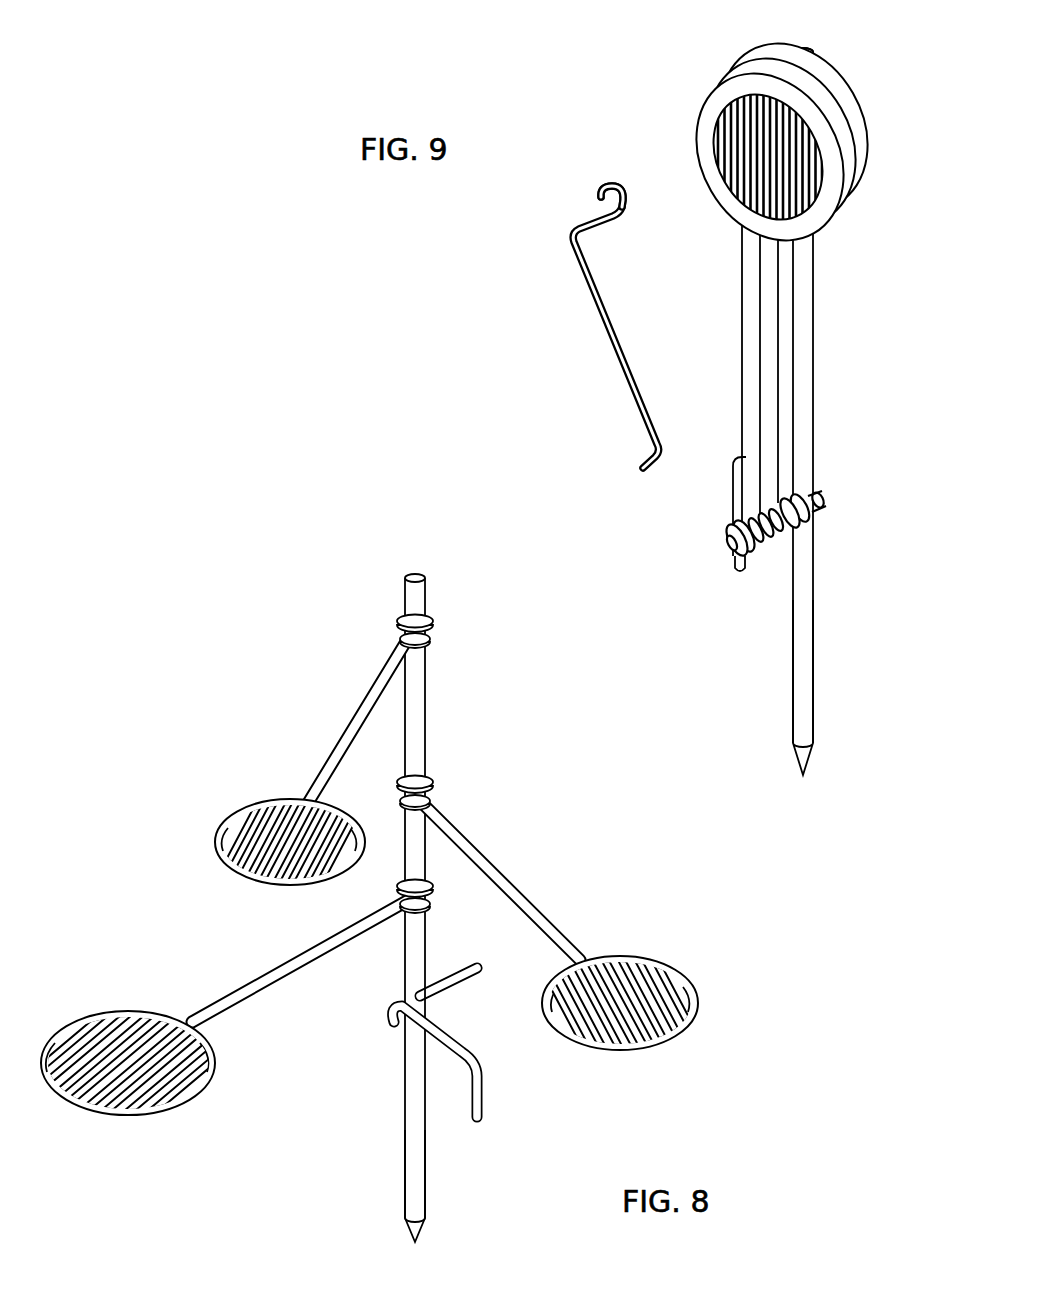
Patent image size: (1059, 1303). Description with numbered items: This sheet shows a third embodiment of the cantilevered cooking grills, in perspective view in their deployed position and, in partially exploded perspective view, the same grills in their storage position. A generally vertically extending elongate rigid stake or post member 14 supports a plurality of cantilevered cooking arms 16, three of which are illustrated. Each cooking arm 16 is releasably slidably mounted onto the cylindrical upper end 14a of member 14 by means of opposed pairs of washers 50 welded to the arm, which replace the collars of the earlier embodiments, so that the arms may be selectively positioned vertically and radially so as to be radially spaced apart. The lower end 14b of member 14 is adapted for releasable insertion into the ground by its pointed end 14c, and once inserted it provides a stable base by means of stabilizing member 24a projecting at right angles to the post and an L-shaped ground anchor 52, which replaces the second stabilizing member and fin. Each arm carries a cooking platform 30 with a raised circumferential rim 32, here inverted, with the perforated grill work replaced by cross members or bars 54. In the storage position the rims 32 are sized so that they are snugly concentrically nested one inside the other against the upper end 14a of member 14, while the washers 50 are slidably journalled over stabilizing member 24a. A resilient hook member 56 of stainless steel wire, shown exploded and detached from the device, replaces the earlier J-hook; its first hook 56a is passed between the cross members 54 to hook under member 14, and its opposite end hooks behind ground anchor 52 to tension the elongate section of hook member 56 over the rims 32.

In FIG. 9, the elongate member 14 is at (828, 320).
In FIG. 8, the elongate member 14 is at (460, 745).
In FIG. 9, the upper end of elongate member 14a is at (820, 48).
In FIG. 8, the upper end of elongate member 14a is at (410, 577).
In FIG. 9, the lower end of elongate member 14b is at (790, 683).
In FIG. 8, the lower end of elongate member 14b is at (432, 1180).
In FIG. 8, the pointed end 14c is at (425, 1230).
In FIG. 8, the cantilevered cooking arm 16 is at (365, 705).
In FIG. 9, the stabilizing member 24a is at (731, 546).
In FIG. 8, the stabilizing member 24a is at (455, 965).
In FIG. 9, the cooking platform 30 is at (706, 219).
In FIG. 8, the cooking platform 30 is at (66, 997).
In FIG. 9, the raised circumferential rim 32 is at (735, 55).
In FIG. 8, the raised circumferential rim 32 is at (215, 838).
In FIG. 8, the washer 50 is at (400, 620).
In FIG. 9, the L-shaped ground anchor 52 is at (745, 575).
In FIG. 8, the L-shaped ground anchor 52 is at (490, 1073).
In FIG. 8, the cross member 54 is at (270, 808).
In FIG. 9, the resilient hook member 56 is at (612, 353).
In FIG. 9, the first hook 56a is at (598, 192).